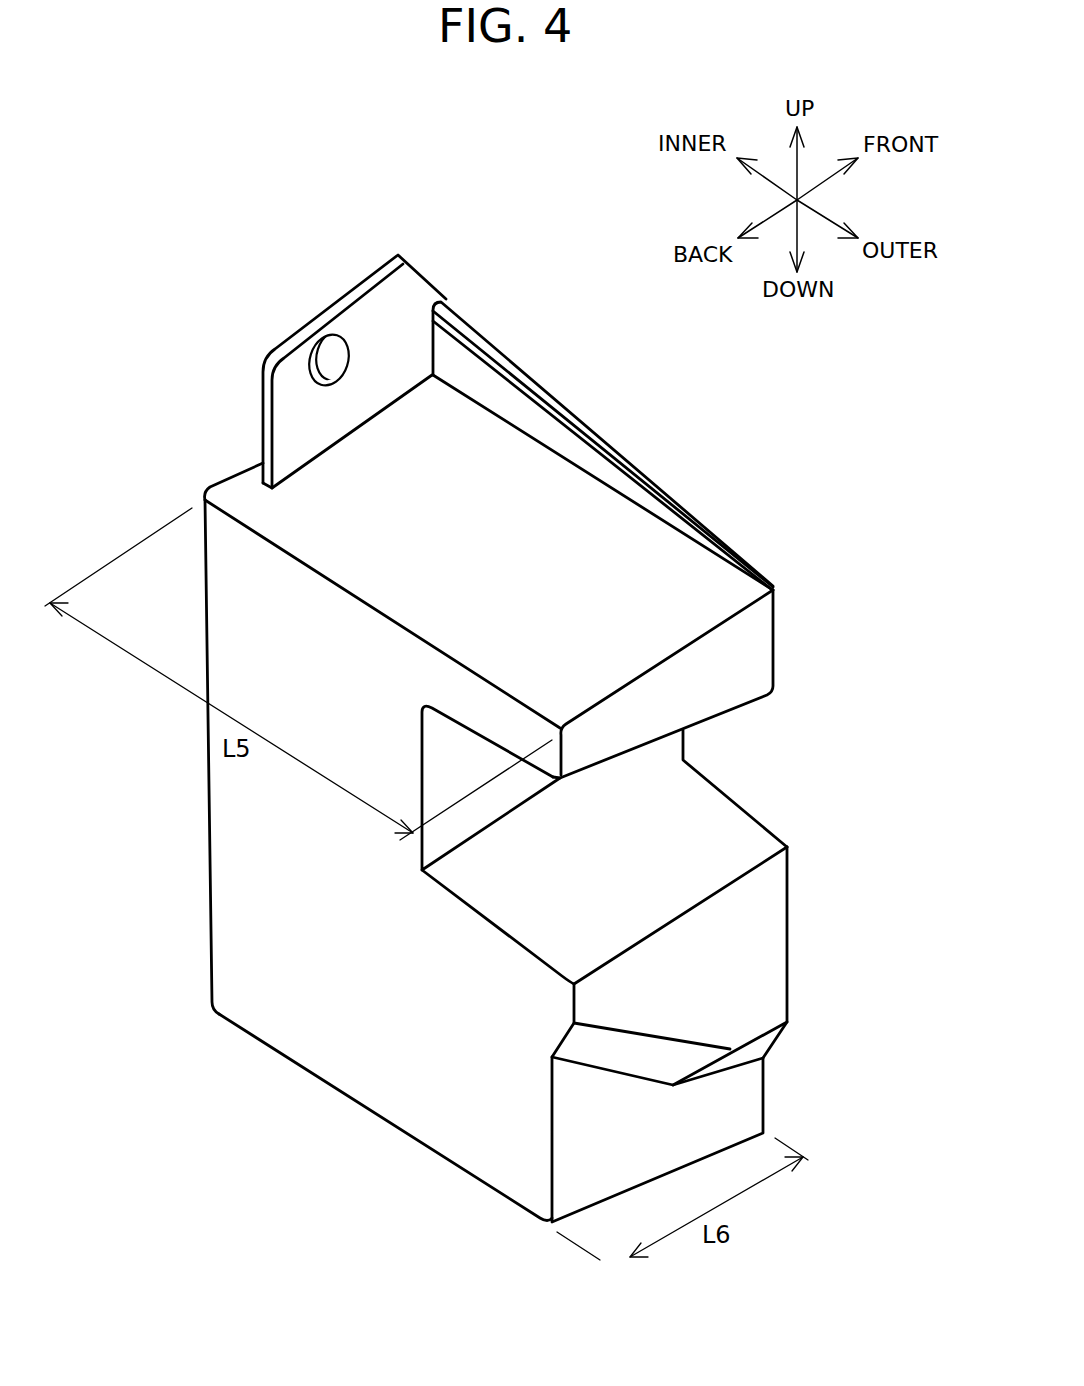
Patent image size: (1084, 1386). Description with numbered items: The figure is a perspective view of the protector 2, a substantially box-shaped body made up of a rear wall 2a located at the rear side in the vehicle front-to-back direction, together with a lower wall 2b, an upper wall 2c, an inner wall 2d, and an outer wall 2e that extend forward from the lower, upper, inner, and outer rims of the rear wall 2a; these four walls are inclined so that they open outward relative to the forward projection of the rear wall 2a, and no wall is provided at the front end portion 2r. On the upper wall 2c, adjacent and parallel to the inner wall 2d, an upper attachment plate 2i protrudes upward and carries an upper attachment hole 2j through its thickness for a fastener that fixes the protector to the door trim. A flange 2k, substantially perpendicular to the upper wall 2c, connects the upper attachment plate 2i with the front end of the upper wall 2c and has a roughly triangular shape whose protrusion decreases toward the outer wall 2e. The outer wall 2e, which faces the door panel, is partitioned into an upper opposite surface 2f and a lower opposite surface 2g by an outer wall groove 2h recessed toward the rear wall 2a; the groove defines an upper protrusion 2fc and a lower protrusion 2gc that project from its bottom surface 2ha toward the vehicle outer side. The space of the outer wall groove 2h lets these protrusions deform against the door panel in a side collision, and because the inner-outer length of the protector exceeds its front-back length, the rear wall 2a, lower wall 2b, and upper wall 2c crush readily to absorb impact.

The protector 2 is at (187, 243).
The rear wall 2a is at (263, 933).
The lower wall 2b is at (360, 1107).
The upper wall 2c is at (577, 505).
The inner wall 2d is at (210, 857).
The outer wall 2e is at (753, 1093).
The upper opposite surface 2f is at (752, 645).
The upper protrusion 2fc is at (663, 684).
The lower opposite surface 2g is at (753, 953).
The lower protrusion 2gc is at (680, 966).
The outer wall groove 2h is at (517, 792).
The bottom surface 2ha is at (498, 845).
The upper attachment plate 2i is at (400, 298).
The upper attachment hole 2j is at (317, 363).
The flange 2k is at (490, 345).
The front end portion 2r is at (755, 818).